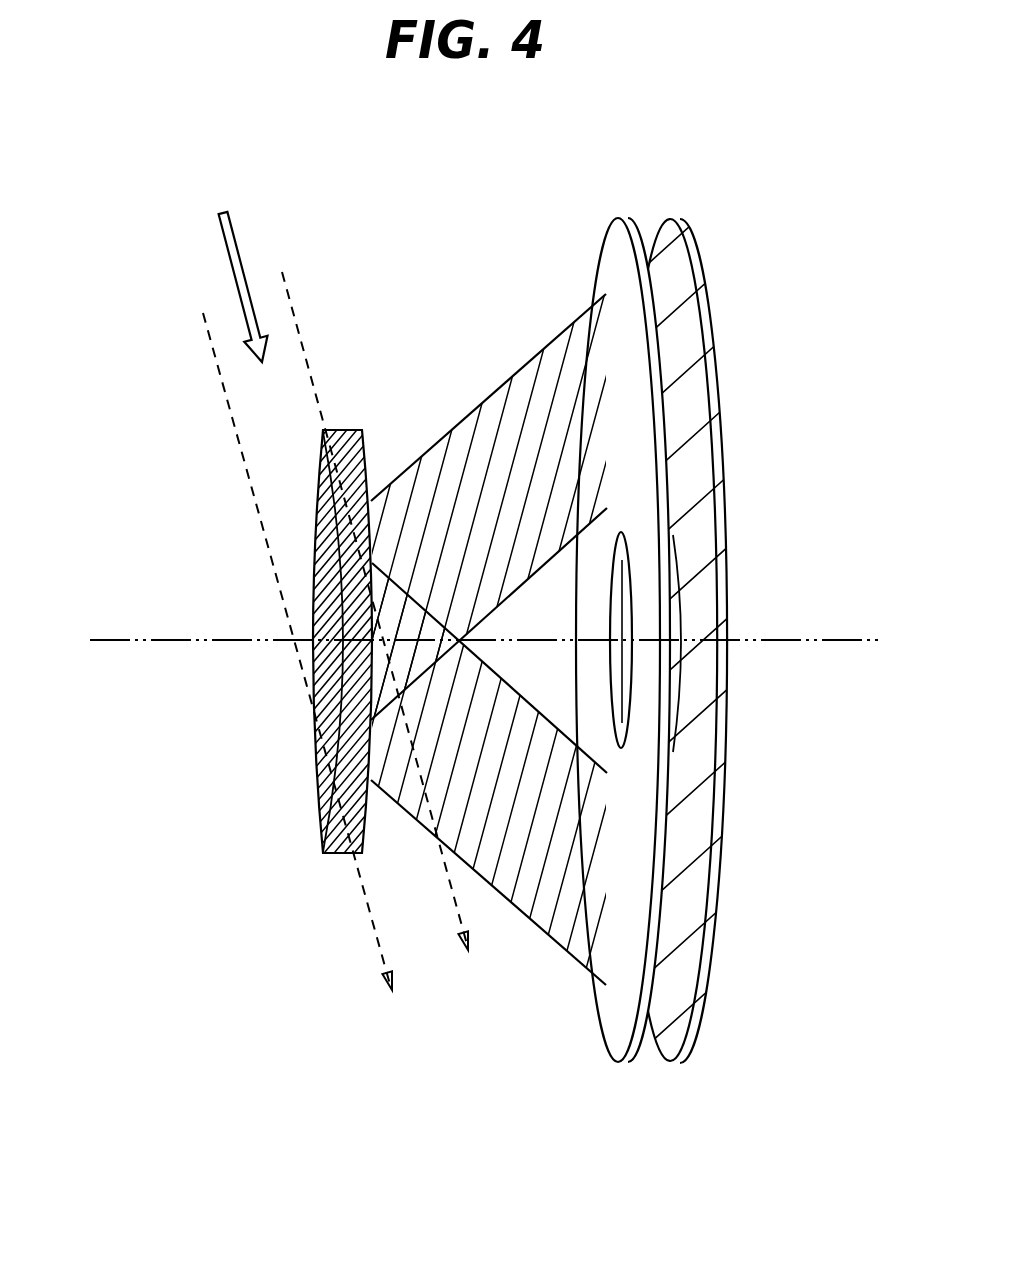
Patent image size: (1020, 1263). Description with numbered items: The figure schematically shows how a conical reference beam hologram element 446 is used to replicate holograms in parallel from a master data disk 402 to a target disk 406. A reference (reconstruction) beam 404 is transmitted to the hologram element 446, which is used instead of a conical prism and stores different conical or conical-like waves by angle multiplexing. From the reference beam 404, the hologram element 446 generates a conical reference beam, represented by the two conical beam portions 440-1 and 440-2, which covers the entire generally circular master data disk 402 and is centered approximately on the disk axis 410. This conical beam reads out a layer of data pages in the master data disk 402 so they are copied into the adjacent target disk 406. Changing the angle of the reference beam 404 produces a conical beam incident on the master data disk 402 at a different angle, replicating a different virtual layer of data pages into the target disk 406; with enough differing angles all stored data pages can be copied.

The master data disk 402 is at (620, 275).
The reference (reconstruction) beam 404 is at (230, 257).
The target disk 406 is at (683, 392).
The disk axis 410 is at (167, 640).
The conical beam portion 440-1 is at (525, 833).
The conical beam portion 440-2 is at (512, 440).
The conical reference (reconstruction) beam hologram element 446 is at (270, 798).